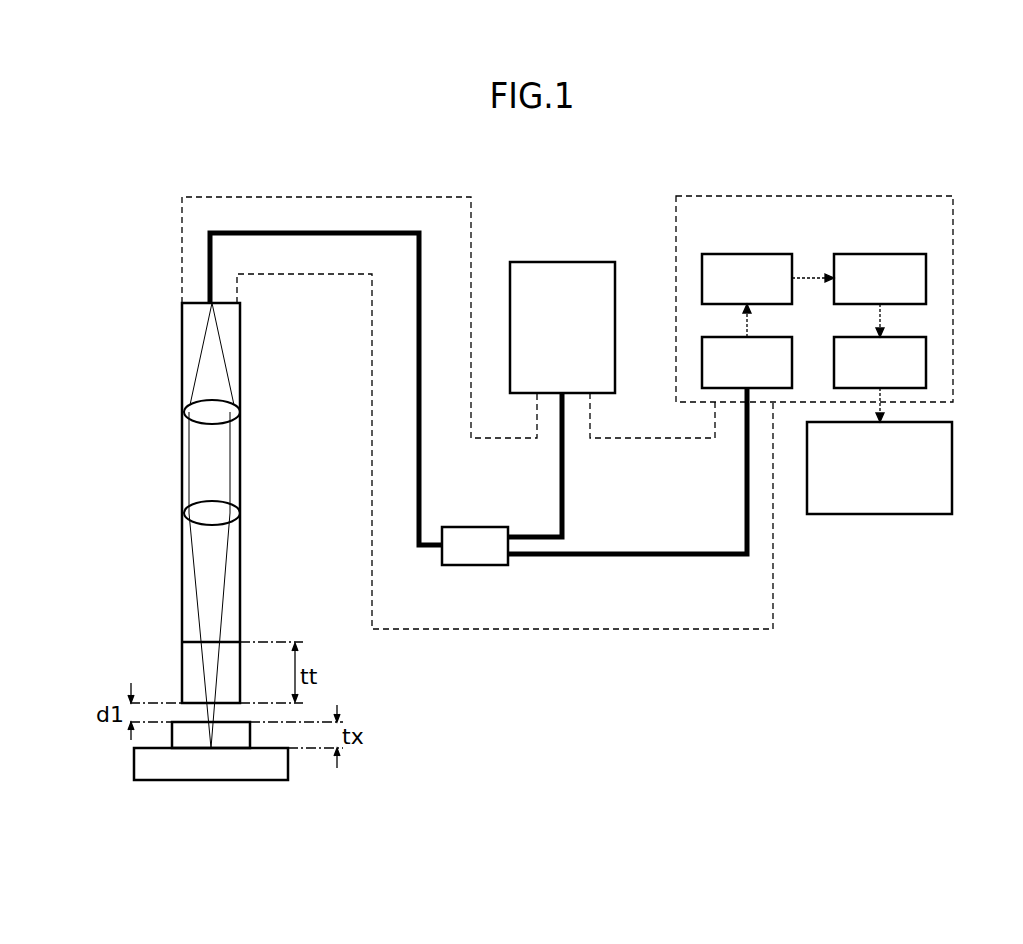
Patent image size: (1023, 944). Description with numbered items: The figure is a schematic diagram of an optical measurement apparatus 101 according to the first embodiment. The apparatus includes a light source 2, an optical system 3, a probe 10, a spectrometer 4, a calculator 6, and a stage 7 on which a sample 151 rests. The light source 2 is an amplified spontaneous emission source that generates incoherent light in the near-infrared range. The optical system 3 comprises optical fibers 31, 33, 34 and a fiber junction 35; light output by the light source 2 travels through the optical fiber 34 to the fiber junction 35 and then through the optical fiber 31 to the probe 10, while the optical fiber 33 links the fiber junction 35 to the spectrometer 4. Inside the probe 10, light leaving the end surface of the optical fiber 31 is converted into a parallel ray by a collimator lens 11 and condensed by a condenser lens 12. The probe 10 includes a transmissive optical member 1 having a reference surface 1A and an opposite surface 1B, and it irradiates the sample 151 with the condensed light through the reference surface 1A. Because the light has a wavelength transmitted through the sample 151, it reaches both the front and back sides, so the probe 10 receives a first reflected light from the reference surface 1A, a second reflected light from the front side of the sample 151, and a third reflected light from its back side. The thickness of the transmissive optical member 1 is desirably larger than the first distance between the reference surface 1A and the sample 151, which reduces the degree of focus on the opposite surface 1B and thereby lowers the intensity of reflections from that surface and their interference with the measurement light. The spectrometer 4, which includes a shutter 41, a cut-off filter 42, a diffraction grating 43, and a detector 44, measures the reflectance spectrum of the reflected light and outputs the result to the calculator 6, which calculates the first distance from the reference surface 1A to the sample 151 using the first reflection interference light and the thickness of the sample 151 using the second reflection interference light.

The optical measurement apparatus 101 is at (67, 228).
The transmissive optical member 1 is at (188, 650).
The reference surface 1A is at (192, 702).
The opposite surface 1B is at (227, 640).
The light source 2 is at (572, 262).
The optical system 3 is at (472, 213).
The spectrometer 4 is at (833, 193).
The calculator 6 is at (917, 515).
The stage 7 is at (134, 762).
The probe 10 is at (182, 468).
The collimator lens 11 is at (205, 408).
The condenser lens 12 is at (205, 512).
The optical fiber 31 is at (422, 462).
The optical fiber 33 is at (653, 553).
The optical fiber 34 is at (565, 490).
The fiber junction 35 is at (480, 527).
The shutter 41 is at (702, 361).
The cut-off filter 42 is at (702, 269).
The diffraction grating 43 is at (928, 277).
The detector 44 is at (928, 370).
The sample 151 is at (230, 740).